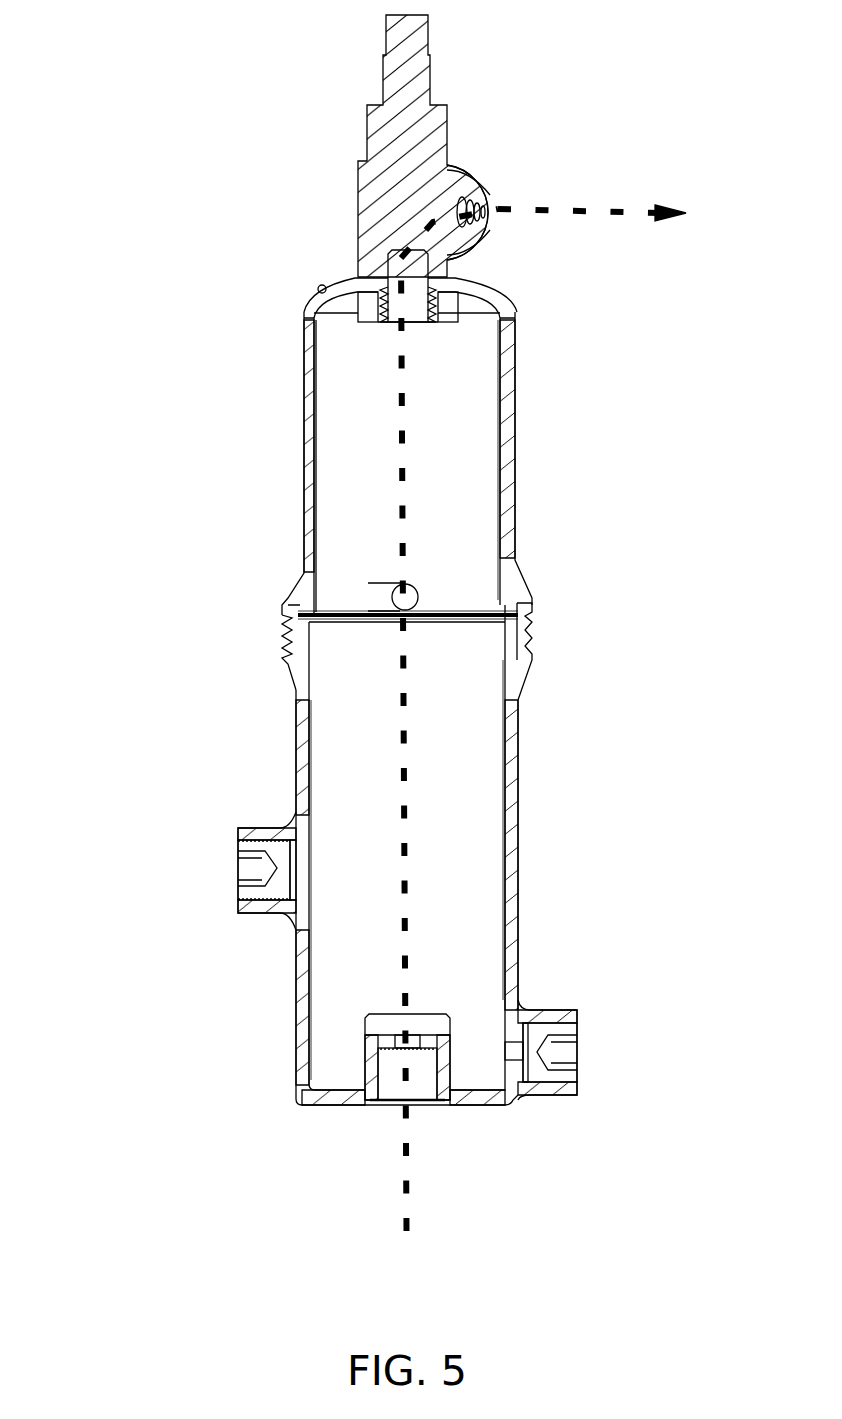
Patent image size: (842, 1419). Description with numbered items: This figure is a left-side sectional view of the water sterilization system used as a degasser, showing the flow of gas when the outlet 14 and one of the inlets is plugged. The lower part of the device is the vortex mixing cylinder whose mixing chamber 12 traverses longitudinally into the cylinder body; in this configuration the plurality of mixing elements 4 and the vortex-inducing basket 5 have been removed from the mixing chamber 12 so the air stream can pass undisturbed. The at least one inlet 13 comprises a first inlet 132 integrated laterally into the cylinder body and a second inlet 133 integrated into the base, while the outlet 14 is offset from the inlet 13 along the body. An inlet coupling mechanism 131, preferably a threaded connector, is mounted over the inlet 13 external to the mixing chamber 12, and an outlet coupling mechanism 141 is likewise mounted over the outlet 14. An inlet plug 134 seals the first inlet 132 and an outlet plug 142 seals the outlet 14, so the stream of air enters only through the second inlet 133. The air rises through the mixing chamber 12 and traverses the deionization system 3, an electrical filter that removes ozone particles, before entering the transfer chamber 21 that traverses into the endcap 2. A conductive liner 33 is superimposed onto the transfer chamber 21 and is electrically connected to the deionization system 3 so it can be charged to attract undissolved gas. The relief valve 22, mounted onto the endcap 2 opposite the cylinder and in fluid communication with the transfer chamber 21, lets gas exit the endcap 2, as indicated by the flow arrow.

The endcap 2 is at (305, 472).
The deionization system 3 is at (443, 608).
The plurality of mixing elements 4 is at (493, 792).
The vortex-inducing basket 5 is at (485, 688).
The mixing chamber 12 is at (484, 946).
The inlet 13 is at (554, 1067).
The outlet 14 is at (188, 872).
The transfer chamber 21 is at (472, 476).
The relief valve 22 is at (362, 199).
The conductive liner 33 is at (316, 405).
The inlet coupling mechanism 131 is at (560, 1098).
The first inlet 132 is at (624, 1049).
The second inlet 133 is at (429, 1120).
The inlet plug 134 is at (573, 1075).
The outlet coupling mechanism 141 is at (258, 913).
The outlet plug 142 is at (188, 905).